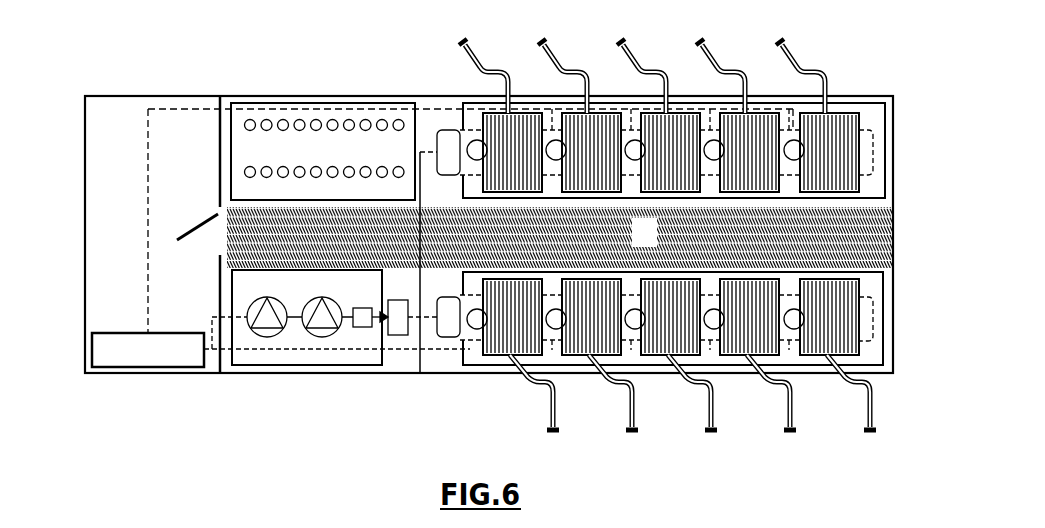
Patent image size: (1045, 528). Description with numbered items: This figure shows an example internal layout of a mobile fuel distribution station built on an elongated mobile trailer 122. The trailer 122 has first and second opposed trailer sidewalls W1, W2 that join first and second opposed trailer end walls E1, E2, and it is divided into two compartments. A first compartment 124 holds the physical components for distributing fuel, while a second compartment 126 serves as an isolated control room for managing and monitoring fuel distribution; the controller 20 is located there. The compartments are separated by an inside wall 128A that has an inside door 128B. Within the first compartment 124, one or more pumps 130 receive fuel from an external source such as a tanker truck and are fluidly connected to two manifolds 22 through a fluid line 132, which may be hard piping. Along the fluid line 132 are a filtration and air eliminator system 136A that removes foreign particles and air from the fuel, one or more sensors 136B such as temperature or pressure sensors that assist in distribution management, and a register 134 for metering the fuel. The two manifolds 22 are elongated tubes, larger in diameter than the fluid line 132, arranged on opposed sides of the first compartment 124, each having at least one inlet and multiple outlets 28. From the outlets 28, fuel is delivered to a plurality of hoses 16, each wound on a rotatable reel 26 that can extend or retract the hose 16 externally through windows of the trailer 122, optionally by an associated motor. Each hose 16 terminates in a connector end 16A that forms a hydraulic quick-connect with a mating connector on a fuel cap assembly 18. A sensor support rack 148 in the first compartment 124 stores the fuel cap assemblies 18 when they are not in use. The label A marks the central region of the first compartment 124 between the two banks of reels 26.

The mobile trailer 122 is at (385, 88).
The first compartment 124 is at (866, 233).
The second compartment 126 is at (116, 235).
The inside wall 128A is at (218, 118).
The inside door 128B is at (206, 205).
The pump 130 is at (277, 340).
The fluid line 132 is at (417, 373).
The register 134 is at (398, 337).
The filtration and air eliminator system 136A is at (362, 332).
The sensor 136B is at (378, 312).
The sensor support rack 148 is at (280, 101).
The fuel cap assembly 18 is at (335, 120).
The controller 20 is at (128, 367).
The manifold 22 is at (437, 130).
The reel 26 is at (523, 108).
The outlet 28 is at (477, 139).
The hose 16 is at (490, 72).
The connector end 16A is at (619, 38).
The first trailer sidewall W1 is at (245, 96).
The second trailer sidewall W2 is at (302, 340).
The first trailer end wall E1 is at (895, 118).
The second trailer end wall E2 is at (85, 113).
The airflow A is at (654, 246).